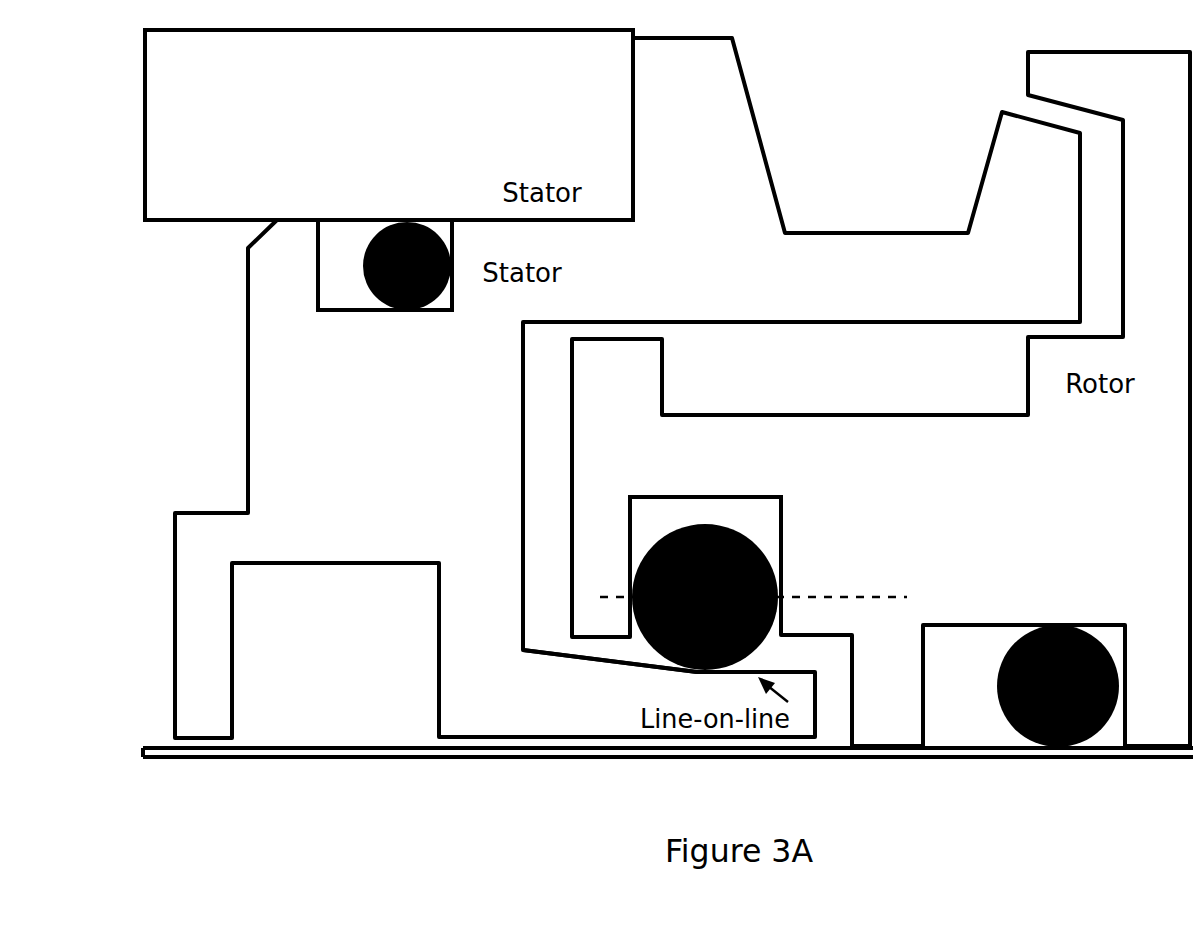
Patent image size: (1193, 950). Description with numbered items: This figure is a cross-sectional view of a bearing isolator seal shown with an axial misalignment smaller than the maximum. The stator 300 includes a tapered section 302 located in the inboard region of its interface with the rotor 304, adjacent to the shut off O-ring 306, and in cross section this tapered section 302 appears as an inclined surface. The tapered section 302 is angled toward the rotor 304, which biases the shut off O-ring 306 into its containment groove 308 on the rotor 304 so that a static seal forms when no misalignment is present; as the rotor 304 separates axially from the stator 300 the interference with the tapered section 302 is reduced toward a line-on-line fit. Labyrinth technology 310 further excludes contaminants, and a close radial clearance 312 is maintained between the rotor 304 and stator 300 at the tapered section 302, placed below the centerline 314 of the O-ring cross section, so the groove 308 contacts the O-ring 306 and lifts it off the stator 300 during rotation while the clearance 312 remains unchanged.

The stator 300 is at (612, 384).
The tapered section 302 is at (610, 657).
The rotor 304 is at (881, 399).
The shut off O-ring 306 is at (705, 597).
The containment groove 308 is at (728, 497).
The labyrinth technology 310 is at (536, 479).
The close radial clearance 312 is at (797, 648).
The centerline 314 is at (885, 598).